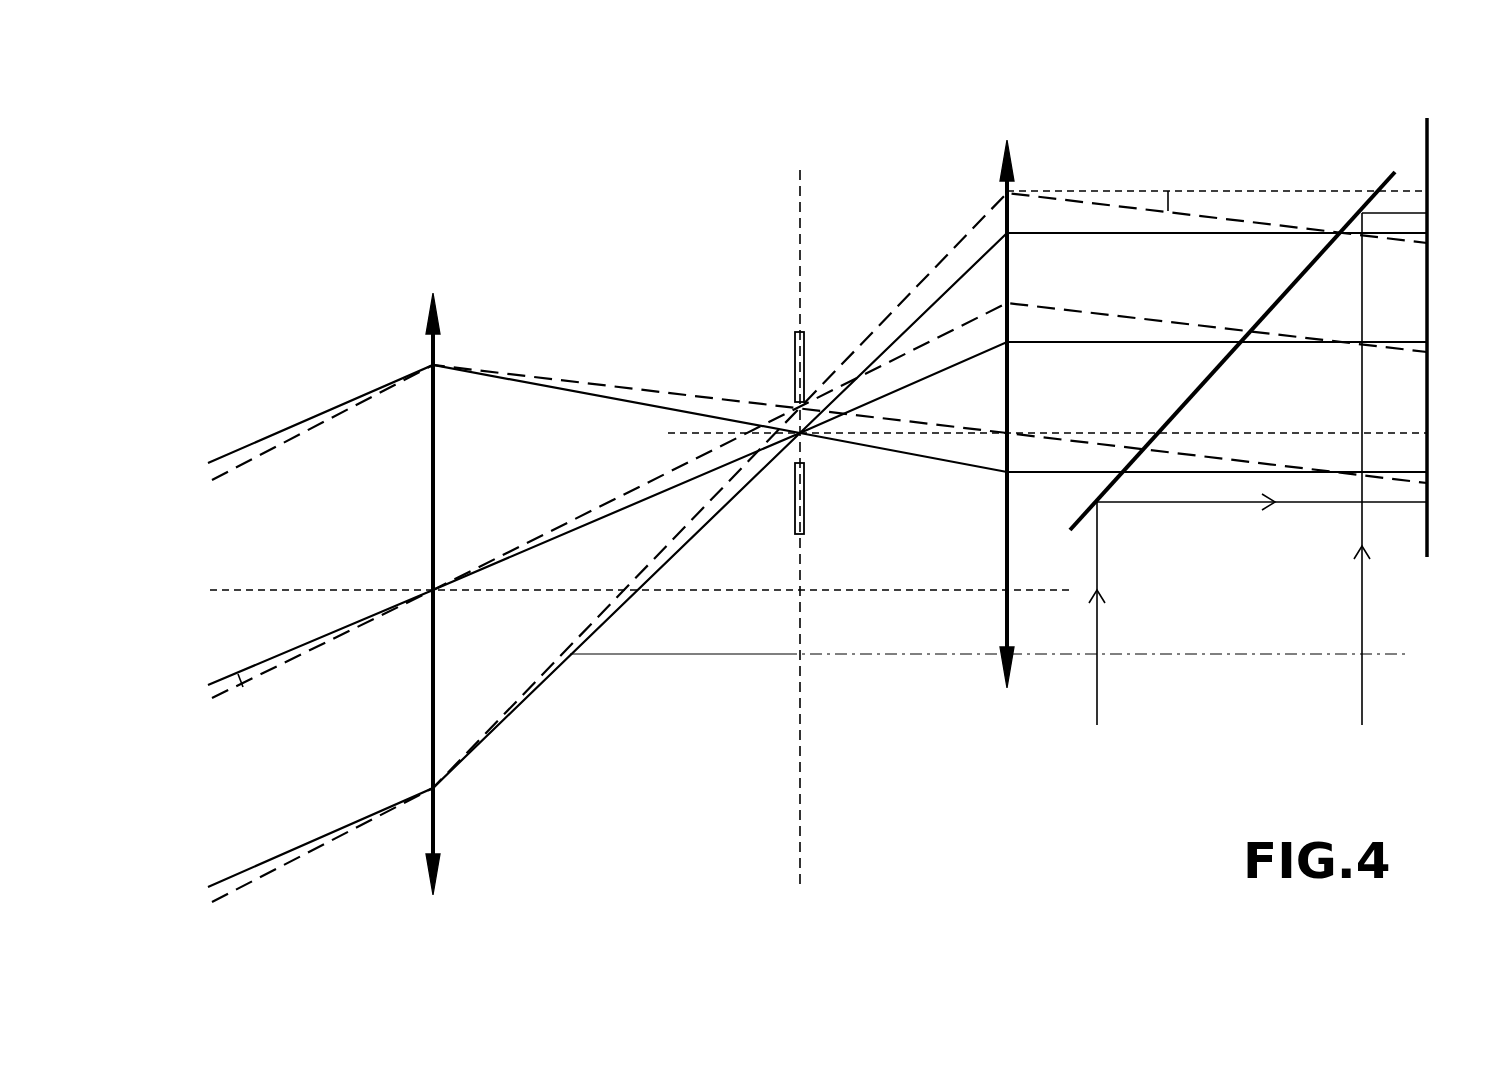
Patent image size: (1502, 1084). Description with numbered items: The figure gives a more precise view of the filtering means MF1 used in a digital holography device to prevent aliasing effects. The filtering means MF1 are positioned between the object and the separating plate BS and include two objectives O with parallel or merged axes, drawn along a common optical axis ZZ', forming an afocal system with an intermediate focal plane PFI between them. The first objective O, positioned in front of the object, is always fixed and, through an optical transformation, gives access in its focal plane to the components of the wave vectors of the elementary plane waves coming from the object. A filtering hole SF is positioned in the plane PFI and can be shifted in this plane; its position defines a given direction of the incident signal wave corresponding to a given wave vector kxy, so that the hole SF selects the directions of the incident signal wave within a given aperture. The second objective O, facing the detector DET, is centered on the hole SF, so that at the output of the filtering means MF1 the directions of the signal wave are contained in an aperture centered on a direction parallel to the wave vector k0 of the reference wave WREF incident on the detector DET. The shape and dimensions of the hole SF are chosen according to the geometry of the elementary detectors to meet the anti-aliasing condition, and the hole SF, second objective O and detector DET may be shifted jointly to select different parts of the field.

The objective O is at (433, 345).
The intermediate focal plane PFI is at (800, 213).
The filtering hole SF is at (806, 505).
The separating plate BS is at (1383, 174).
The detector DET is at (1427, 163).
The reference wave WREF is at (1362, 585).
The filtering means MF1 is at (943, 787).
The wave vector of the reference wave k0 is at (1246, 509).
The wave vector kxy is at (311, 783).
The optical axis ZZ' is at (613, 580).